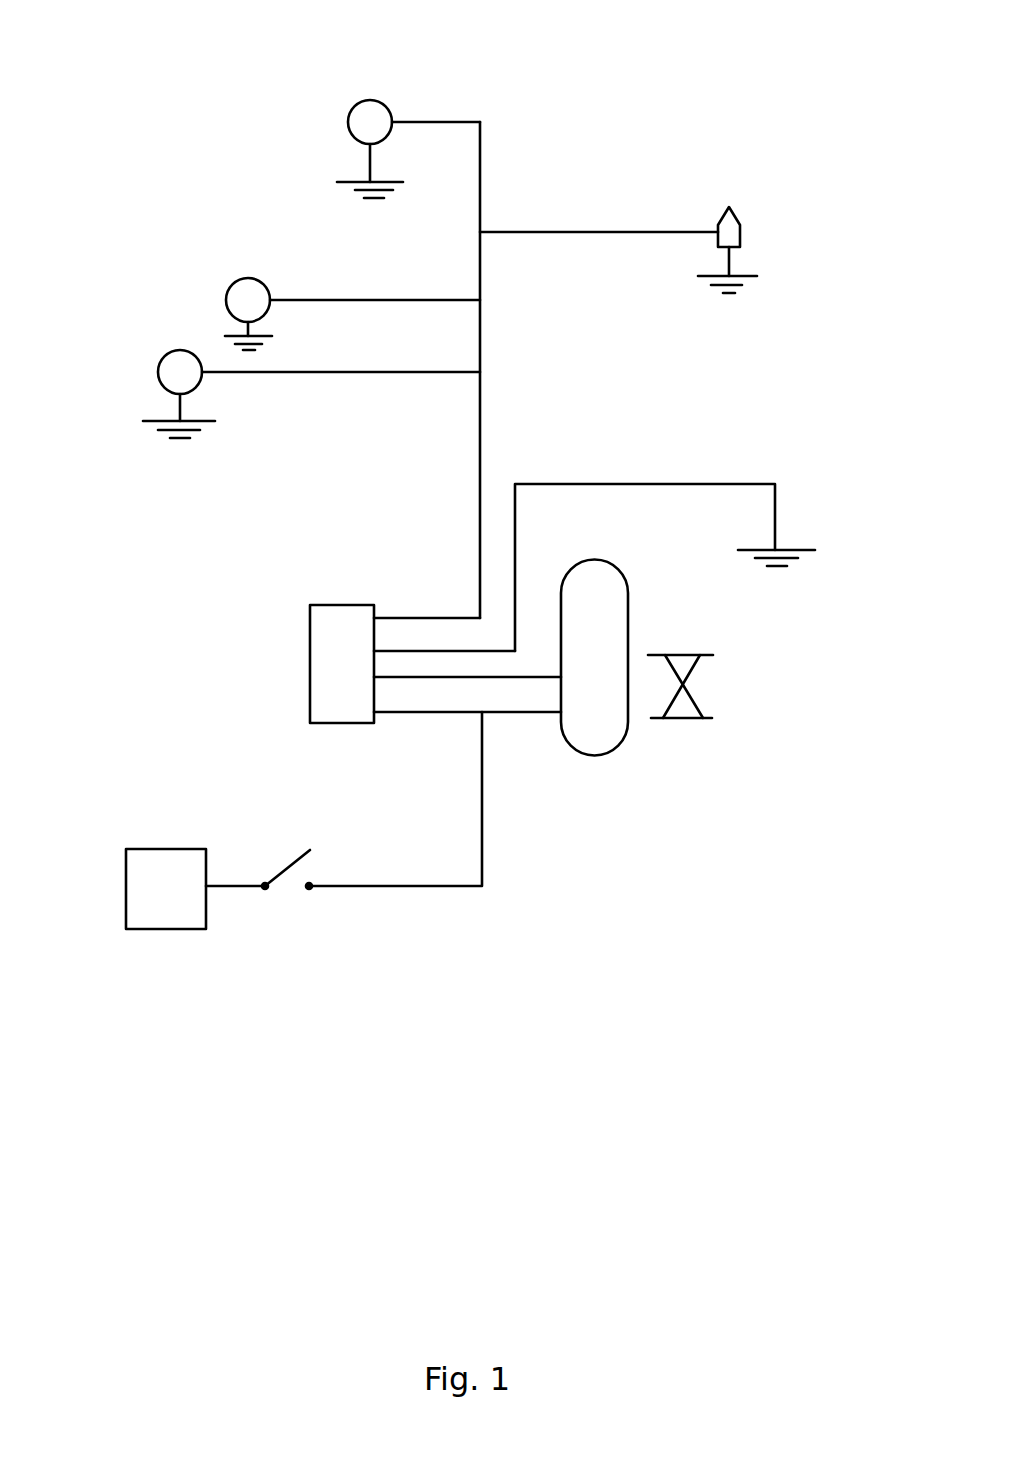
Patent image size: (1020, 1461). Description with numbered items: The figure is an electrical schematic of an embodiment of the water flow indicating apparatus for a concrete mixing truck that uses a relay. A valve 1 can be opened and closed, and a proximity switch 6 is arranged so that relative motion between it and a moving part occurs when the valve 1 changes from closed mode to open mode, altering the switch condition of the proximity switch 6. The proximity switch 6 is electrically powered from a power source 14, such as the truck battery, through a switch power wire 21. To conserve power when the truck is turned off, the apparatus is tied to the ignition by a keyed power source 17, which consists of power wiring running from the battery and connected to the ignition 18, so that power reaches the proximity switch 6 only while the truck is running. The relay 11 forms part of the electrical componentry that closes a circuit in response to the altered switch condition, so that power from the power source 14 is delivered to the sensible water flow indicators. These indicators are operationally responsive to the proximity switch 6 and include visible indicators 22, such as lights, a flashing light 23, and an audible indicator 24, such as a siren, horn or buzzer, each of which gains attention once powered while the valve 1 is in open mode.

The valve 1 is at (722, 700).
The proximity switch 6 is at (605, 757).
The relay 11 is at (310, 675).
The power source 14 is at (200, 929).
The keyed power source 17 is at (245, 913).
The ignition 18 is at (288, 893).
The switch power wire 21 is at (508, 714).
The visible indicator 22 is at (355, 100).
The flashing light 23 is at (160, 352).
The audible indicator 24 is at (741, 211).